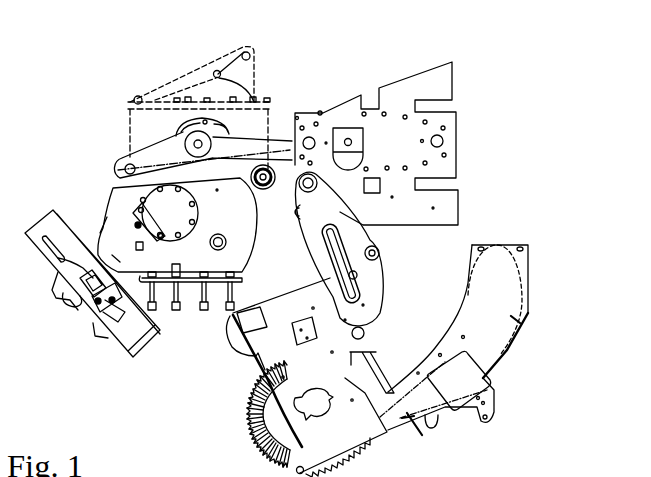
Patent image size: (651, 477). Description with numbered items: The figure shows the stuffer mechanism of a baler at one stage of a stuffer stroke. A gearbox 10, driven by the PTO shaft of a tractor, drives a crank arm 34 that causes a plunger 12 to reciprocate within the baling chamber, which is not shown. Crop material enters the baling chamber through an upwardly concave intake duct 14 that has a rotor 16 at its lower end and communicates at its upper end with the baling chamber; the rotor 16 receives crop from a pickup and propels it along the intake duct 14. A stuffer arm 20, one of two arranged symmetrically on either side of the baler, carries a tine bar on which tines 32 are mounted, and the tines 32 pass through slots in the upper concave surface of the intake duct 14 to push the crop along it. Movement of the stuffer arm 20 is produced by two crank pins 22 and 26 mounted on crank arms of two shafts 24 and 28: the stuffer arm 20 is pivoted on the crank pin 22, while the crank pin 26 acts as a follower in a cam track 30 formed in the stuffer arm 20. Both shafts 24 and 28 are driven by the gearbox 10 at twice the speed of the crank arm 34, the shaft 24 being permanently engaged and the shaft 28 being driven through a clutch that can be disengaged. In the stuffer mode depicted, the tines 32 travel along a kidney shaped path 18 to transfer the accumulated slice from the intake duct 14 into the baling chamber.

The gearbox 10 is at (160, 90).
The plunger 12 is at (425, 80).
The intake duct 14 is at (507, 355).
The rotor 16 is at (254, 417).
The kidney shaped path 18 is at (528, 276).
The stuffer arm 20 is at (374, 307).
The crank pin 22 is at (334, 196).
The shaft 24 is at (296, 219).
The crank pin 26 is at (358, 274).
The shaft 28 is at (378, 250).
The cam track 30 is at (332, 240).
The tines 32 is at (388, 389).
The crank arm 34 is at (158, 157).